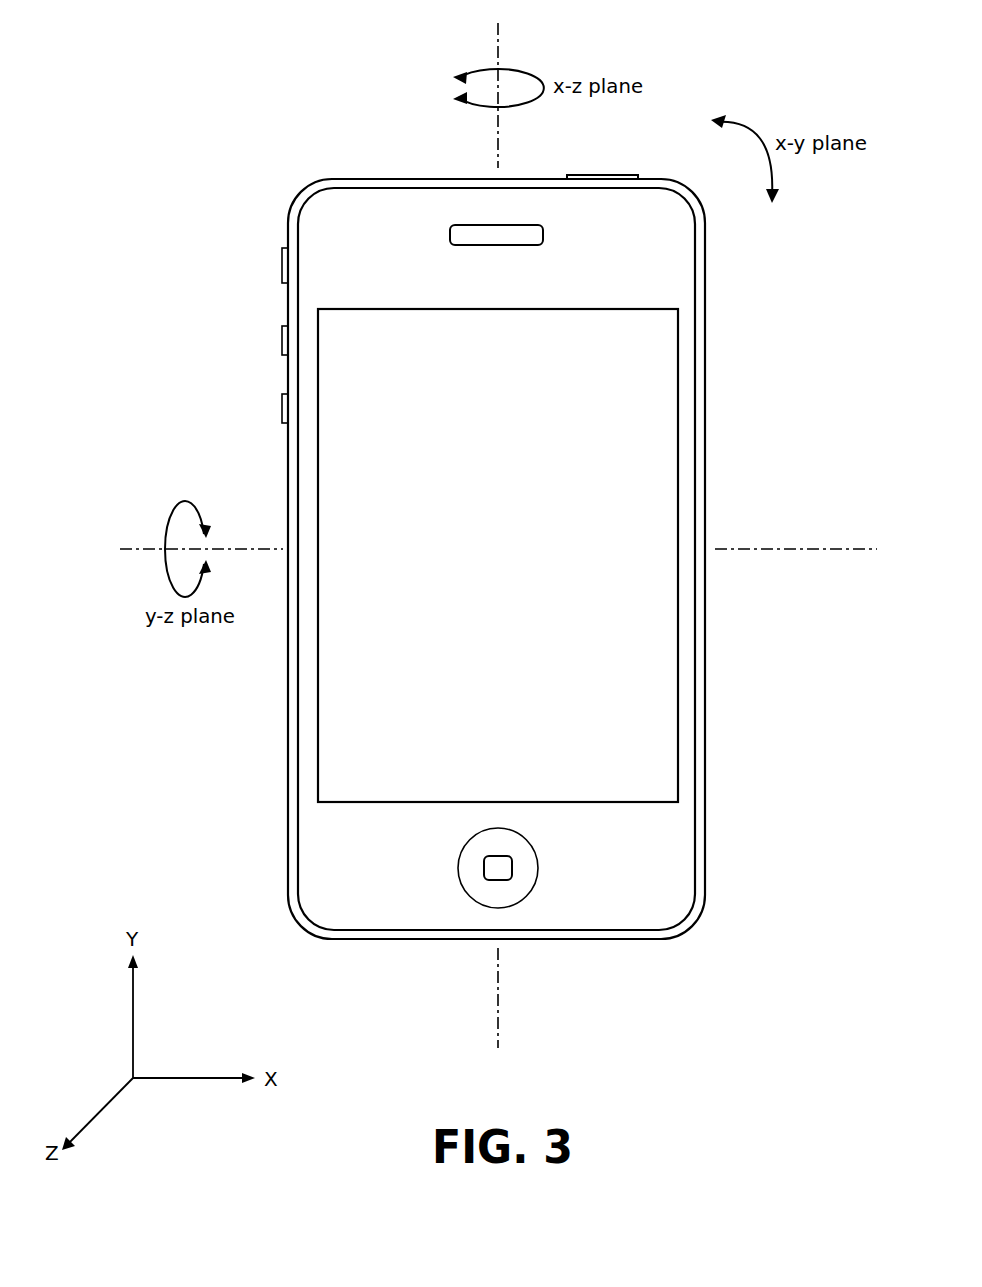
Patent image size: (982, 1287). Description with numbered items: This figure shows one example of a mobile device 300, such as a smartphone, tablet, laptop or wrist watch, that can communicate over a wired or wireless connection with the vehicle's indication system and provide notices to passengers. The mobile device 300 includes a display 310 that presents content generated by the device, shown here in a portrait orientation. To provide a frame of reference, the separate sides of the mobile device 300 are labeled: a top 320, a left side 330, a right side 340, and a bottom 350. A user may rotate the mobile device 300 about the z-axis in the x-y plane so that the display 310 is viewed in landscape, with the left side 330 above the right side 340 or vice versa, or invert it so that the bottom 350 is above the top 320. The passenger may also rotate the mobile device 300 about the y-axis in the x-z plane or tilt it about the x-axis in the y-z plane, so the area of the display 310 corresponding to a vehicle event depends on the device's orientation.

The mobile device 300 is at (214, 108).
The display 310 is at (515, 446).
The top 320 is at (402, 208).
The left side 330 is at (287, 497).
The right side 340 is at (706, 577).
The bottom 350 is at (512, 938).